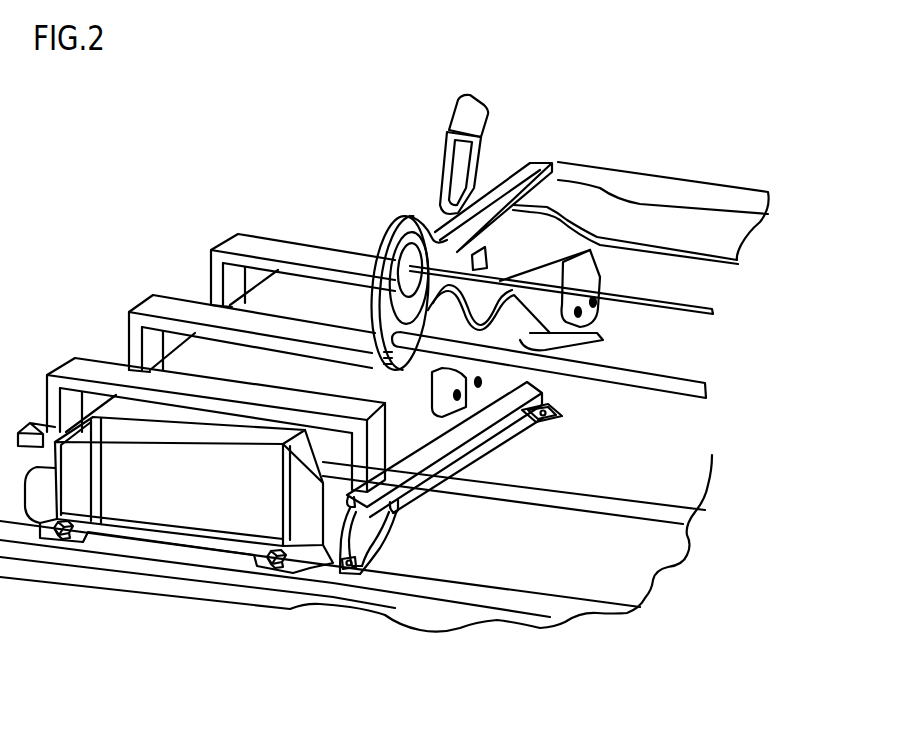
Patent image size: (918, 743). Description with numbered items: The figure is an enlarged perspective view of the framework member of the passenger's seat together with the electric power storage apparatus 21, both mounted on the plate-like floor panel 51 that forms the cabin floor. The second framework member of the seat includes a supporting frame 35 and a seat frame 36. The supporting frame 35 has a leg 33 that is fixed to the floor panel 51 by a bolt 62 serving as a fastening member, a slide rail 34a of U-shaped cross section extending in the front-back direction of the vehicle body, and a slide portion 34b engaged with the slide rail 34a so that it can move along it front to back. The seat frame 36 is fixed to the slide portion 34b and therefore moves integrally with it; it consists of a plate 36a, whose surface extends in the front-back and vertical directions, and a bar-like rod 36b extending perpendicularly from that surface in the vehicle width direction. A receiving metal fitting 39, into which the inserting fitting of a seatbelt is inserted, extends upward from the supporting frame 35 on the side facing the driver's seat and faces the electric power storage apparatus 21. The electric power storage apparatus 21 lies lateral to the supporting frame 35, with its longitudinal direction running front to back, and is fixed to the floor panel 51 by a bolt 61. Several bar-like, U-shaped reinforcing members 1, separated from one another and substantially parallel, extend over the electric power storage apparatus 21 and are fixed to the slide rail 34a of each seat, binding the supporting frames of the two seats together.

The reinforcing member 1 is at (240, 248).
The electric power storage apparatus 21 is at (200, 492).
The leg 33 is at (380, 560).
The slide rail 34a is at (418, 490).
The slide portion 34b is at (465, 420).
The supporting frame 35 is at (441, 541).
The seat frame 36 is at (580, 218).
The plate 36a is at (525, 177).
The rod 36b is at (636, 300).
The receiving metal fitting 39 is at (467, 123).
The floor panel 51 is at (587, 567).
The bolt 61 is at (60, 540).
The bolt 62 is at (340, 572).